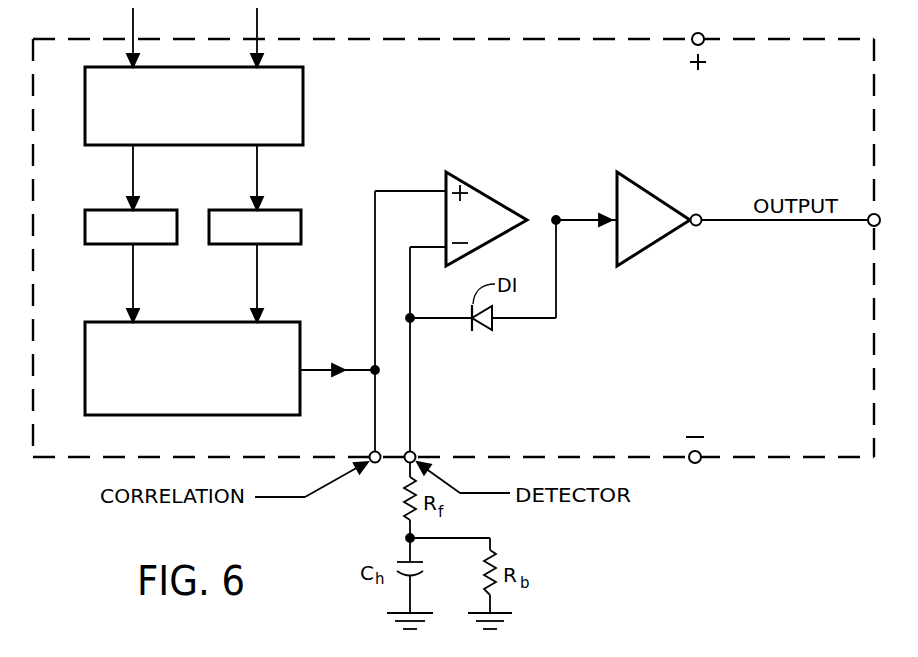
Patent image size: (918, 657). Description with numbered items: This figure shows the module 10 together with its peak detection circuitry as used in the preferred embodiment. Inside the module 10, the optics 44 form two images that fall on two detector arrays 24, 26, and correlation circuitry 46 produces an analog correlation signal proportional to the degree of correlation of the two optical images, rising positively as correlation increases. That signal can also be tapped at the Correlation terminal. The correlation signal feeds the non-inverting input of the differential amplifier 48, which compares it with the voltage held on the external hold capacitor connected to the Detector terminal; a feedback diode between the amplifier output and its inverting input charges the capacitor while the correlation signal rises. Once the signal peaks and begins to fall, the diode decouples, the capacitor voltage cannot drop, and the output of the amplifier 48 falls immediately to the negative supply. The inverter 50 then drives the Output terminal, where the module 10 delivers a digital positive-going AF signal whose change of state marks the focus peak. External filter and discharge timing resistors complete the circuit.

The module 10 is at (473, 39).
The optics 44 is at (304, 107).
The detector array 24 is at (152, 210).
The detector array 26 is at (277, 210).
The correlation circuitry 46 is at (277, 322).
The differential amplifier 48 is at (491, 195).
The inverter 50 is at (664, 198).